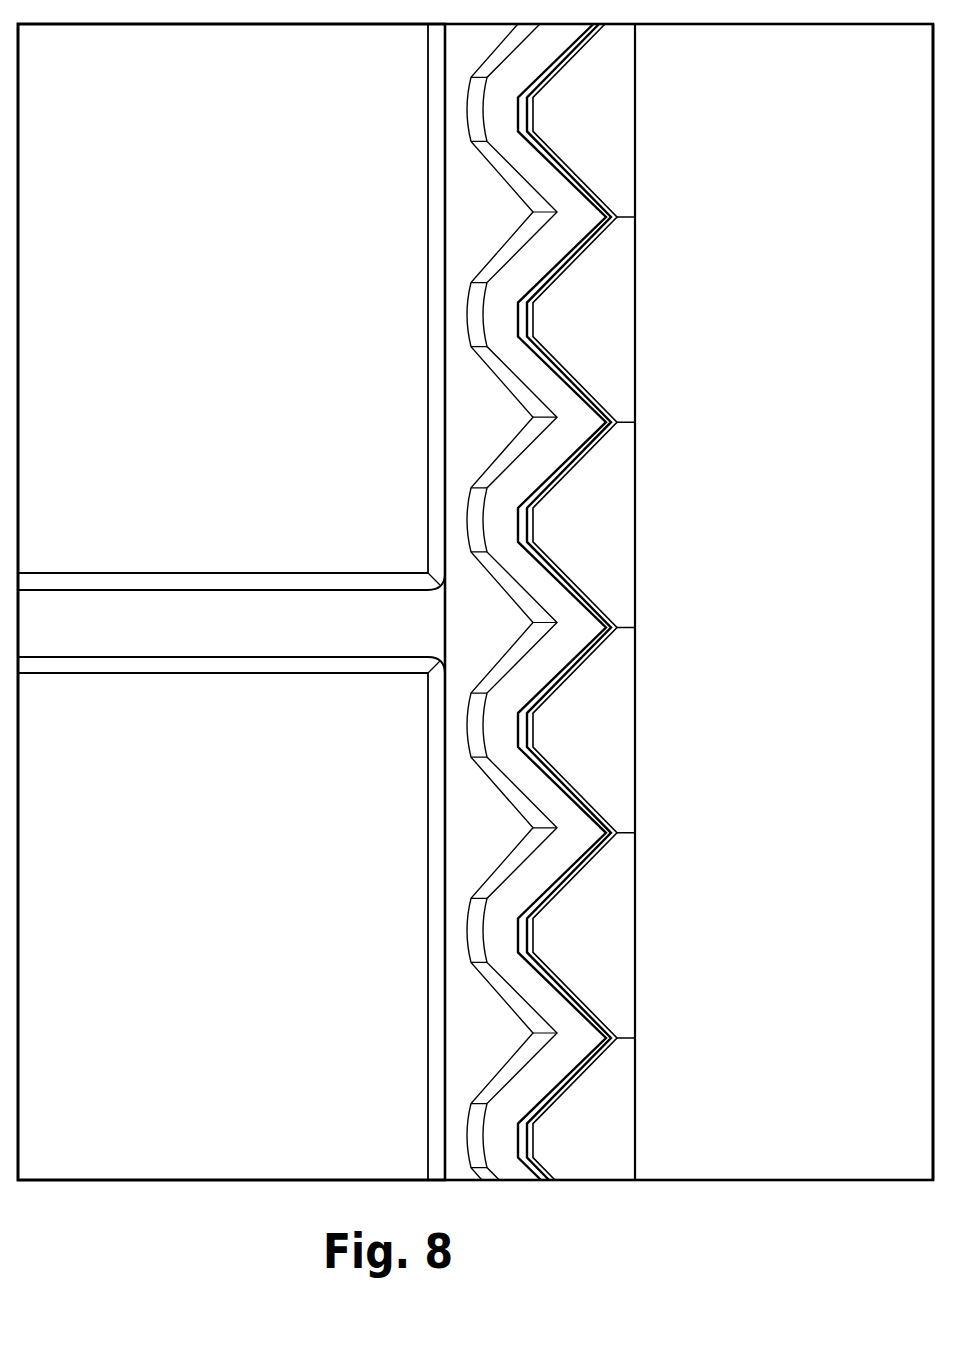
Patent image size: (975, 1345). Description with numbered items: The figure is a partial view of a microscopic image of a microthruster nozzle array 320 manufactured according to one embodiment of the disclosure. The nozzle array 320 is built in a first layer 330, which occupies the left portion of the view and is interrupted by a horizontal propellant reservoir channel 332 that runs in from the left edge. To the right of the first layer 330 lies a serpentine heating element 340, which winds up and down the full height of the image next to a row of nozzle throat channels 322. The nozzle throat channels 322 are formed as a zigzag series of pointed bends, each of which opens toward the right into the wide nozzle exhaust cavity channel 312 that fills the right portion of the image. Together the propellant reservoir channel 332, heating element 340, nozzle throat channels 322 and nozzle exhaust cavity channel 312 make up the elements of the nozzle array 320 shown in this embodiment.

The nozzle exhaust cavity channel 312 is at (802, 574).
The nozzle array 320 is at (202, 1088).
The nozzle throat channels 322 is at (622, 225).
The first layer 330 is at (218, 252).
The propellant reservoir channel 332 is at (400, 636).
The heating element 340 is at (540, 163).